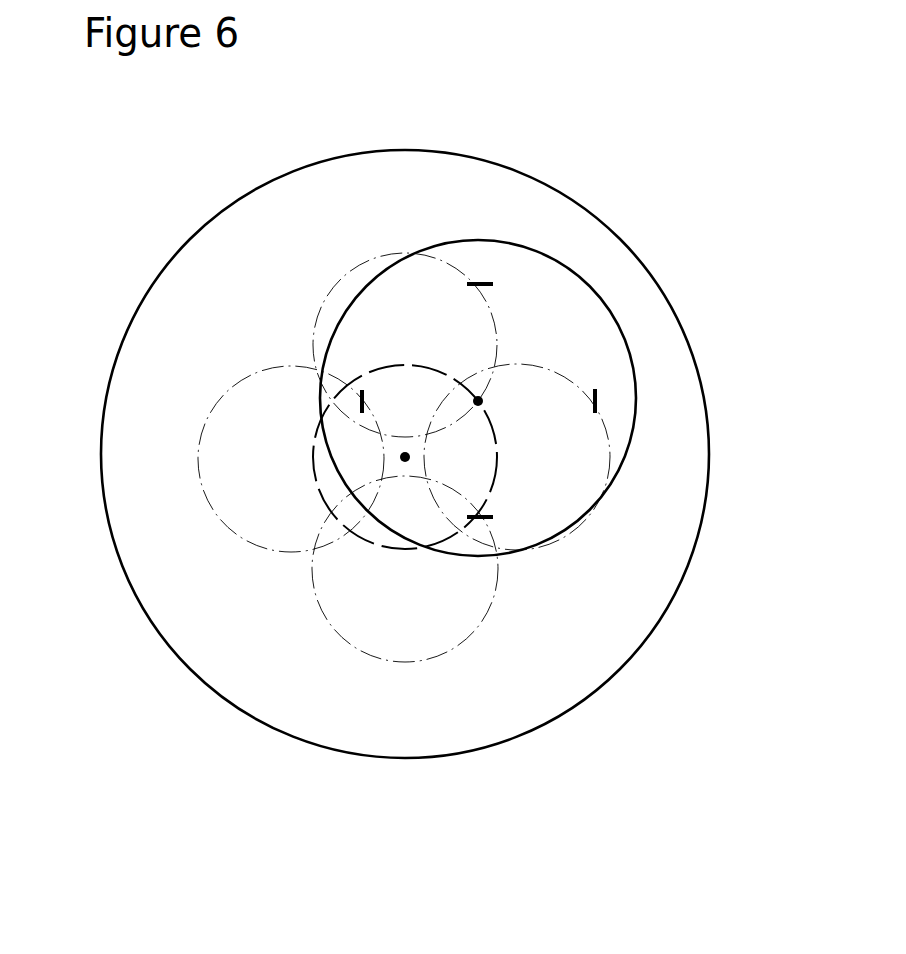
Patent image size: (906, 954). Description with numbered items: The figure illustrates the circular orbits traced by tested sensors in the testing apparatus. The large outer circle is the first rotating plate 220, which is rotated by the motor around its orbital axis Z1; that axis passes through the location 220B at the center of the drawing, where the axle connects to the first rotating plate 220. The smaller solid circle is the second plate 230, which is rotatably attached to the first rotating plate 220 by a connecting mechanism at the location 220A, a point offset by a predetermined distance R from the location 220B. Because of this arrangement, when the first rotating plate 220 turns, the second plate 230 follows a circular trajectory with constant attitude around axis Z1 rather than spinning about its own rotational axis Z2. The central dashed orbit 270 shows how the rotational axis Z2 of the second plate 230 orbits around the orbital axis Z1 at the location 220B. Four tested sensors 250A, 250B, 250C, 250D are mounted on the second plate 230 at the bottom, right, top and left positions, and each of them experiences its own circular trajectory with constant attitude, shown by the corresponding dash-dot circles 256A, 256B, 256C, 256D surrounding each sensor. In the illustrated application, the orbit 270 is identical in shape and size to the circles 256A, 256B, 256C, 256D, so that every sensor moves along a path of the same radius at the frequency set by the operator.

The first rotating plate 220 is at (605, 685).
The location 220A is at (478, 401).
The location 220B is at (405, 457).
The second plate 230 is at (578, 277).
The sensor 250A is at (480, 515).
The sensor 250B is at (595, 398).
The sensor 250C is at (487, 284).
The sensor 250D is at (364, 400).
The circle 256A is at (426, 662).
The circle 256B is at (610, 450).
The circle 256C is at (373, 250).
The circle 256D is at (198, 467).
The orbit 270 is at (377, 545).